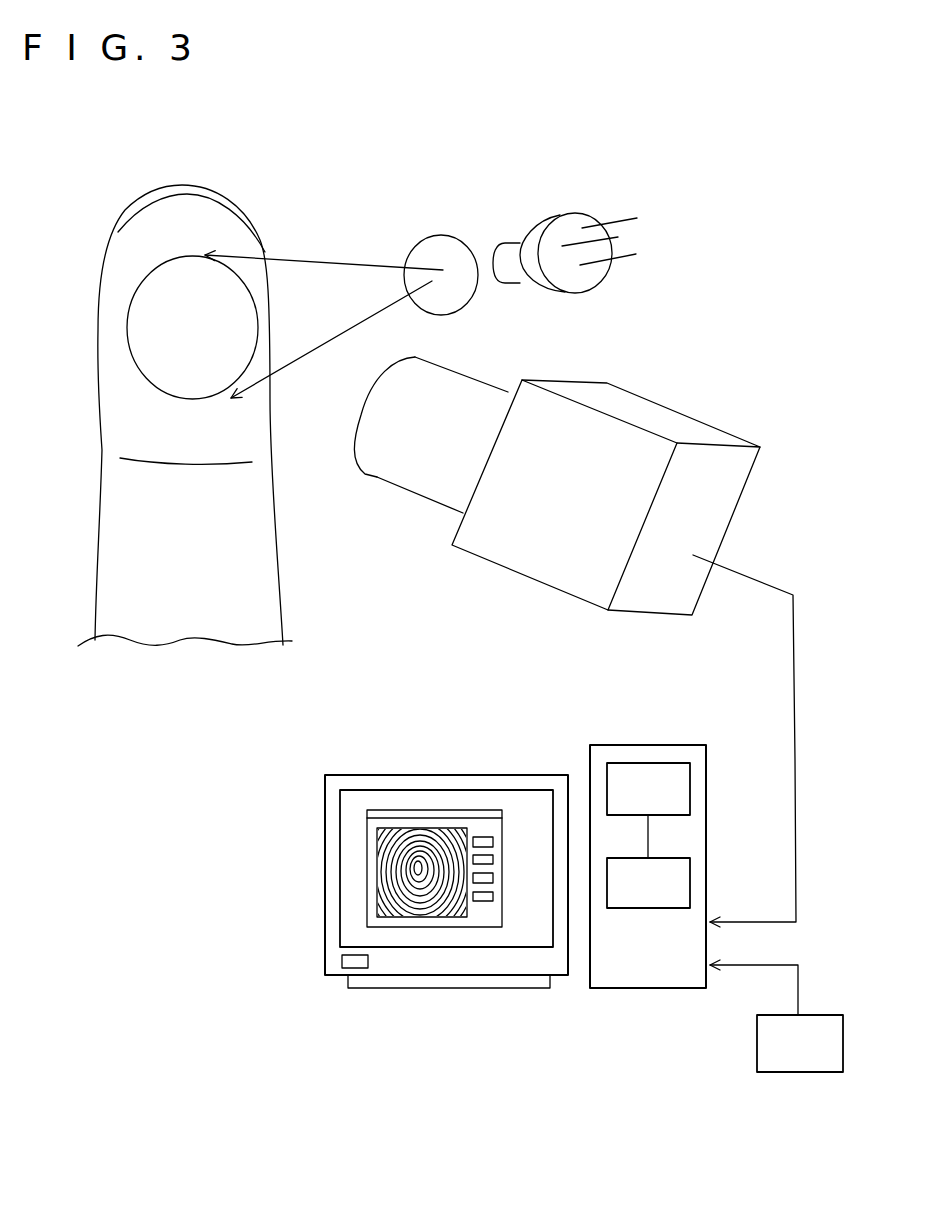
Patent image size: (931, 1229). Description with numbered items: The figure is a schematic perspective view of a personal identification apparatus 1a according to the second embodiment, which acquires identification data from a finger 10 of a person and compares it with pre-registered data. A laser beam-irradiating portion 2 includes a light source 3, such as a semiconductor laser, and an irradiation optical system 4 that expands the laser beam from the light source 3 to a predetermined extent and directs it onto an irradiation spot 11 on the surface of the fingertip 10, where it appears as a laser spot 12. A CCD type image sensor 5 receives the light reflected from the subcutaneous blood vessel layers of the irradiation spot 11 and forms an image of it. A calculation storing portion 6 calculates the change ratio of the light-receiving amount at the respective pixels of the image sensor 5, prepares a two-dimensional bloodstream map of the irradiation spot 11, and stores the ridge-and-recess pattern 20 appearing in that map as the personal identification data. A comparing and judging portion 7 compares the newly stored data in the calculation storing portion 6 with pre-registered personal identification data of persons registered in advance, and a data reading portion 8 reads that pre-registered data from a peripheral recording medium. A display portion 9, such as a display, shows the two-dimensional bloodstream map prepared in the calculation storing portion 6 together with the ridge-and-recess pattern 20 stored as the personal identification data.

The personal identification apparatus 1a is at (830, 141).
The laser beam-irradiating portion 2 is at (518, 157).
The light source 3 is at (580, 213).
The irradiation optical system 4 is at (433, 235).
The CCD type image sensor 5 is at (716, 383).
The calculation storing portion 6 is at (690, 795).
The comparing and judging portion 7 is at (690, 880).
The data reading portion 8 is at (828, 1015).
The display portion 9 is at (480, 772).
The finger 10 is at (272, 197).
The irradiation spot 11 is at (180, 295).
The laser spot 12 is at (137, 287).
The ridge-and-recess pattern 20 is at (470, 926).